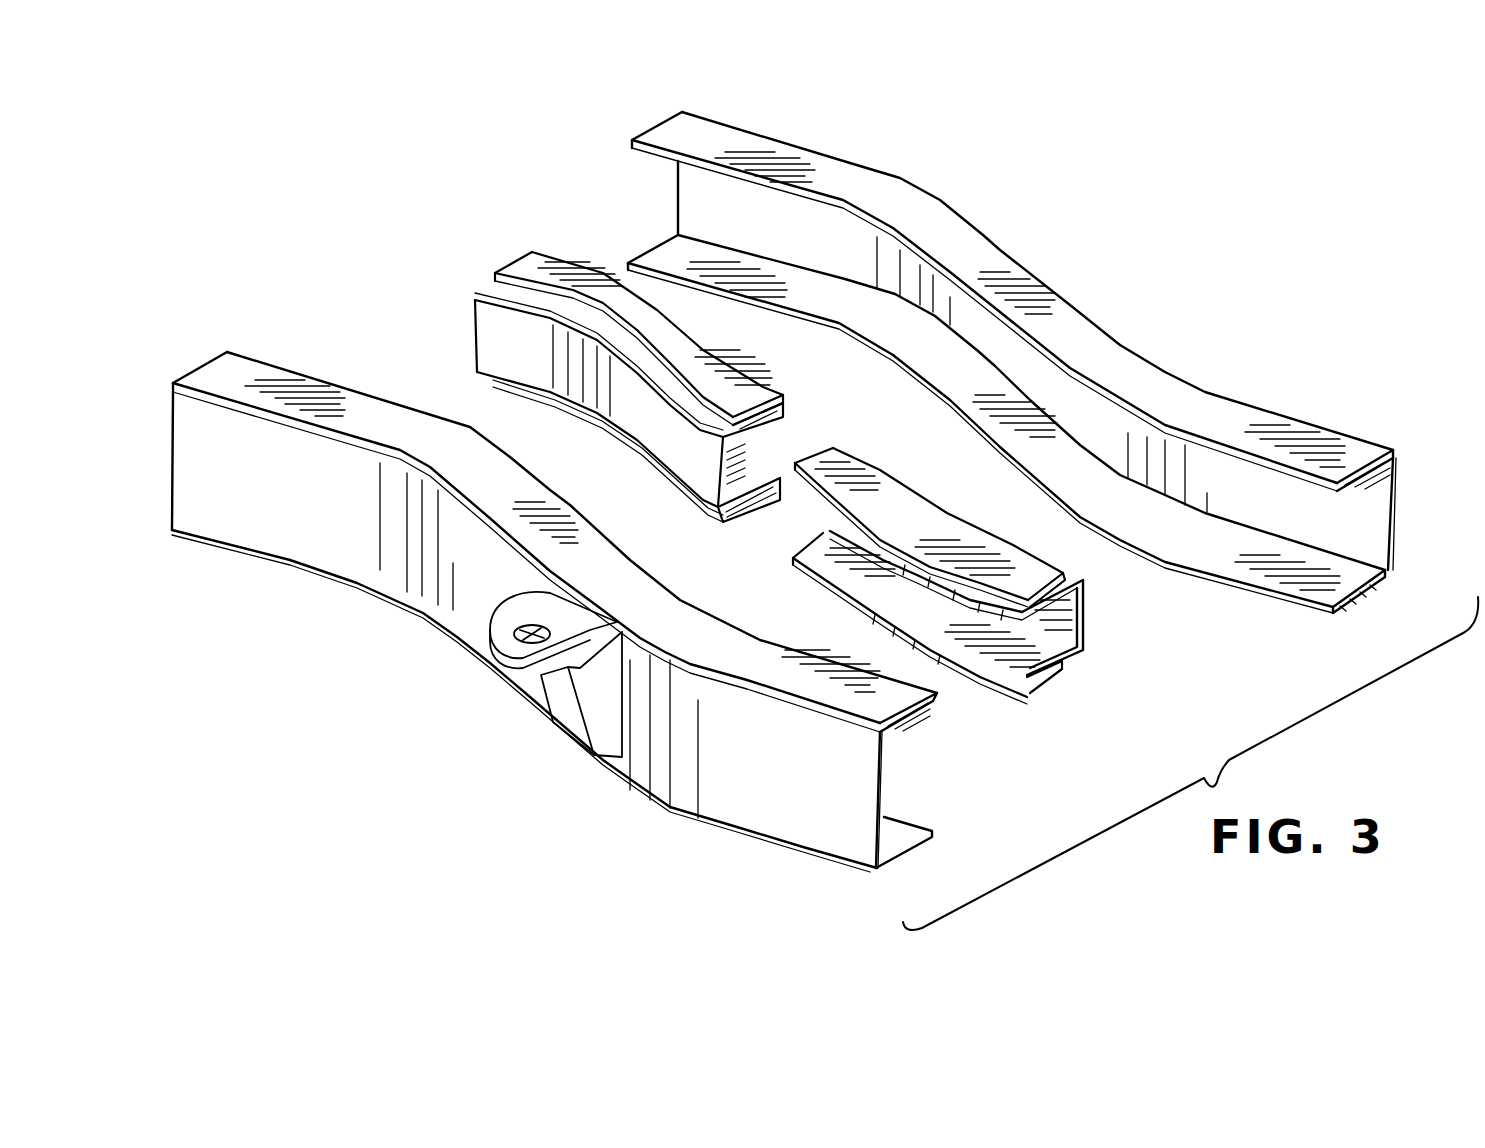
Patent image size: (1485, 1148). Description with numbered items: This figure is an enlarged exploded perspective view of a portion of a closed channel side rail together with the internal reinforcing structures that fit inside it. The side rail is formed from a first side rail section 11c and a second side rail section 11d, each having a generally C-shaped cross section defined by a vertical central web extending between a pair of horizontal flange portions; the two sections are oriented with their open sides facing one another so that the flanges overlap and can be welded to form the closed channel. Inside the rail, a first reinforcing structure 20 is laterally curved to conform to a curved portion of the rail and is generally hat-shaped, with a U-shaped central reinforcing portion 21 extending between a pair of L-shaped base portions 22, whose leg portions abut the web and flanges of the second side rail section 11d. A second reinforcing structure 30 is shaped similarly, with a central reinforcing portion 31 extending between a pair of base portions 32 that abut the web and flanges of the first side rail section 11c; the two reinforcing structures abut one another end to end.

The first side rail section 11c is at (300, 530).
The second side rail section 11d is at (863, 183).
The first reinforcing structure 20 is at (415, 270).
The central reinforcing portion 21 is at (490, 334).
The base portions 22 is at (737, 393).
The second reinforcing structure 30 is at (1107, 602).
The central reinforcing portion 31 is at (1083, 612).
The base portions 32 is at (913, 528).